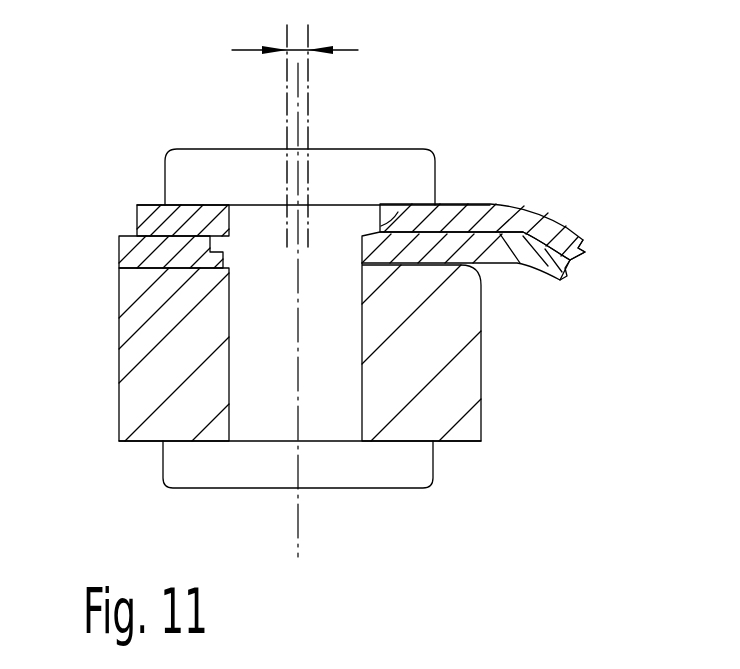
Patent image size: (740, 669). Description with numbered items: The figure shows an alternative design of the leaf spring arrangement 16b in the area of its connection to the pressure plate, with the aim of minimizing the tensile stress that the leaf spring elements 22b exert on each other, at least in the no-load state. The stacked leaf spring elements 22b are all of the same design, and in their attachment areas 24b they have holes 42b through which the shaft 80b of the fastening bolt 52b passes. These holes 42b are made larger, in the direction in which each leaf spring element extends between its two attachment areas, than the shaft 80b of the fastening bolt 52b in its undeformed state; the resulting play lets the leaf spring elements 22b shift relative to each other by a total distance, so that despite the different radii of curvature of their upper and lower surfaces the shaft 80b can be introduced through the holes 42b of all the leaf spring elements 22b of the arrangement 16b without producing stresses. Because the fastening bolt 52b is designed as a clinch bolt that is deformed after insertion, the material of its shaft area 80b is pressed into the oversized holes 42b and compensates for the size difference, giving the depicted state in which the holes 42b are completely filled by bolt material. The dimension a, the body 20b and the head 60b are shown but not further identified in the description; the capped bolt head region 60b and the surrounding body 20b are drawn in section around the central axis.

The width of the passage opening a is at (243, 50).
The leaf spring arrangement 16b is at (515, 184).
The housing body 20b is at (470, 388).
The leaf spring elements 22b is at (583, 240).
The attachment areas 24b is at (150, 207).
The holes 42b is at (120, 340).
The fastening bolt 52b is at (331, 268).
The cap 60b is at (415, 173).
The shaft 80b is at (254, 212).